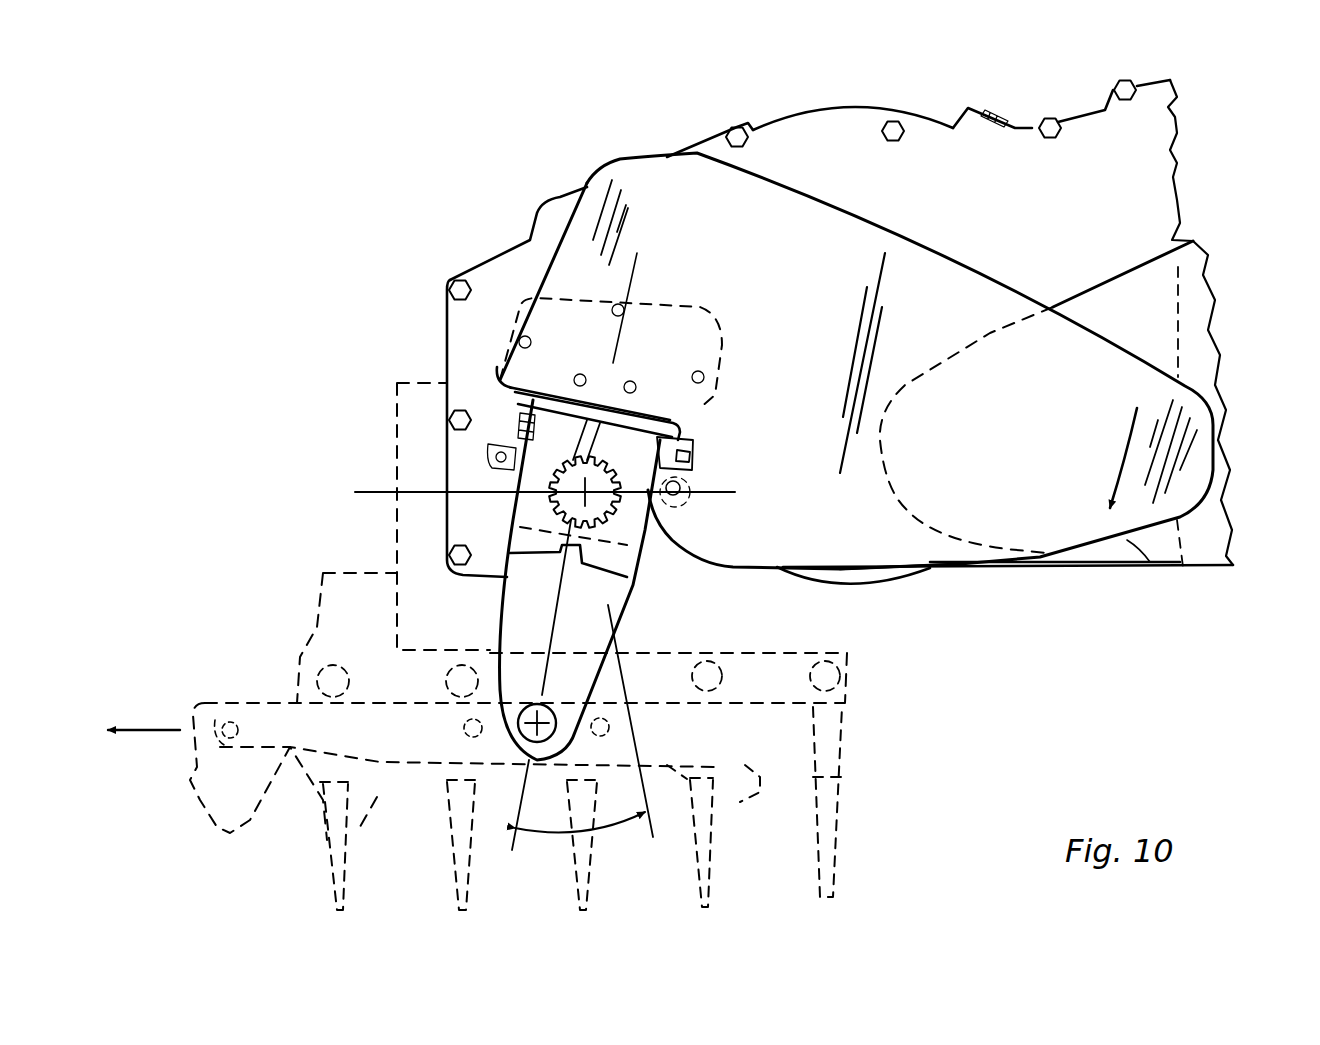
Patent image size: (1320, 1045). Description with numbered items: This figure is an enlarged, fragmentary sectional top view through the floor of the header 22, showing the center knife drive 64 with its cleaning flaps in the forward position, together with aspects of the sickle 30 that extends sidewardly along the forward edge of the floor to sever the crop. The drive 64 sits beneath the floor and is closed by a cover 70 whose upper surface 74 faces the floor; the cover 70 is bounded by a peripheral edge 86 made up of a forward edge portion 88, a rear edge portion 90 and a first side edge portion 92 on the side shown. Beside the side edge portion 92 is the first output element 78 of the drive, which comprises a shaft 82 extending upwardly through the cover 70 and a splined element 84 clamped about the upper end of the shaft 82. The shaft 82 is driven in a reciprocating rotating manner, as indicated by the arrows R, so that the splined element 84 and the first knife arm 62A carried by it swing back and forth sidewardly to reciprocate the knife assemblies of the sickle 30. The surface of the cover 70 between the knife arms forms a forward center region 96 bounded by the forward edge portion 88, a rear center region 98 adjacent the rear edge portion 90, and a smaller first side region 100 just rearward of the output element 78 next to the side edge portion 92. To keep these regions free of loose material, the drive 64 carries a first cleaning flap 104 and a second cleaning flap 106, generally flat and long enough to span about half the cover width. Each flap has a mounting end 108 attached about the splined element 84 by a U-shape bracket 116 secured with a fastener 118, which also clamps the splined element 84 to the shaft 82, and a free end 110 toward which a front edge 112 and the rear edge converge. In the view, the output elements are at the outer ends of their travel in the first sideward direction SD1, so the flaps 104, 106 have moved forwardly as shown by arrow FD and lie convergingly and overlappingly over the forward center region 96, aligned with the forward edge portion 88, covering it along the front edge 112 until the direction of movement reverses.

The header 22 is at (1223, 133).
The sickle 30 is at (840, 857).
The first knife arm 62A is at (497, 611).
The center knife drive 64 is at (883, 107).
The cover 70 is at (1217, 368).
The upper surface 74 is at (1150, 180).
The first output element 78 is at (487, 534).
The splined element 84 is at (537, 507).
The shaft 82 is at (548, 485).
The peripheral edge 86 is at (1008, 611).
The forward edge portion 88 is at (1043, 570).
The rear edge portion 90 is at (793, 117).
The first side edge portion 92 is at (445, 322).
The forward center region 96 is at (983, 570).
The rear center region 98 is at (1003, 163).
The first side region 100 is at (493, 277).
The first cleaning flap 104 is at (950, 258).
The second cleaning flap 106 is at (1120, 270).
The mounting end 108 is at (570, 333).
The free end 110 is at (1080, 290).
The front edge 112 is at (893, 570).
The U-shape bracket 116 is at (520, 397).
The fastener 118 is at (697, 432).
The first sideward direction SD1 is at (556, 652).
The forward direction arrow FD is at (1130, 441).
The reciprocating rotation arrows R is at (545, 840).